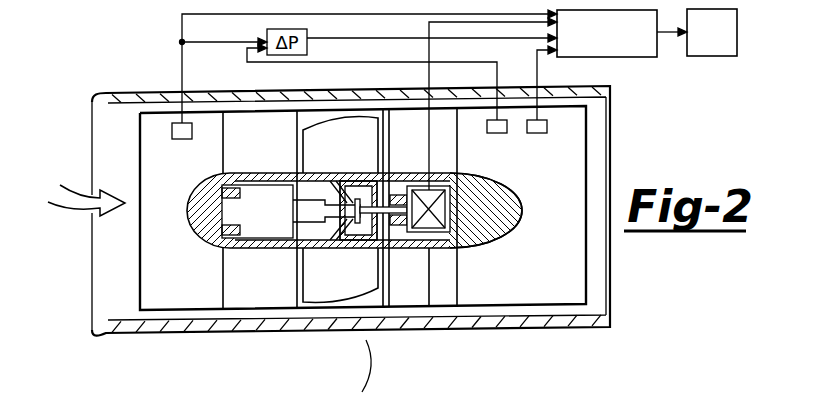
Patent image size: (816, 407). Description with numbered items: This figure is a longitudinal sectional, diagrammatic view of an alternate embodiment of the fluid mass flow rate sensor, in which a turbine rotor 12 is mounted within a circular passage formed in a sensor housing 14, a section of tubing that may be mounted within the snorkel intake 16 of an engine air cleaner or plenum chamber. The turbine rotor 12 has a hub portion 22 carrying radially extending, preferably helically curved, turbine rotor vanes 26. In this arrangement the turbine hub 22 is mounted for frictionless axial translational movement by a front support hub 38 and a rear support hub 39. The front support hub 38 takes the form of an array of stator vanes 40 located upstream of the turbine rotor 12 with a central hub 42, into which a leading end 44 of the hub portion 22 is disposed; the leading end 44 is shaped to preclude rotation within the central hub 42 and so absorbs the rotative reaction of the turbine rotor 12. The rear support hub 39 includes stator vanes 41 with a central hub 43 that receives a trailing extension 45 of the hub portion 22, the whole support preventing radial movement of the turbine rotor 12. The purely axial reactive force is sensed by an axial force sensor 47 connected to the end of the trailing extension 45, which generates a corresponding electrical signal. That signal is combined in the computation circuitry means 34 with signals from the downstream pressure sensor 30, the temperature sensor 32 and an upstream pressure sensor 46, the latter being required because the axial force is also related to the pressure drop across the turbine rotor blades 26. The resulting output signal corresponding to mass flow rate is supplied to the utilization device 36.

The turbine rotor 12 is at (384, 366).
The sensor housing 14 is at (572, 306).
The snorkel intake 16 is at (604, 328).
The turbine rotor hub portion 22 is at (350, 250).
The turbine rotor vanes 26 is at (314, 272).
The pressure sensor 30 is at (499, 134).
The temperature sensor 32 is at (547, 128).
The computation circuitry means 34 is at (622, 33).
The utilization device 36 is at (712, 32).
The front support hub 38 is at (202, 246).
The rear support hub 39 is at (487, 242).
The stator vanes 40 is at (268, 303).
The stator vanes 41 is at (452, 292).
The central hub 42 is at (186, 199).
The central hub 43 is at (404, 171).
The leading end 44 is at (262, 219).
The trailing extension 45 is at (389, 262).
The upstream pressure sensor 46 is at (172, 133).
The axial force sensor 47 is at (435, 249).